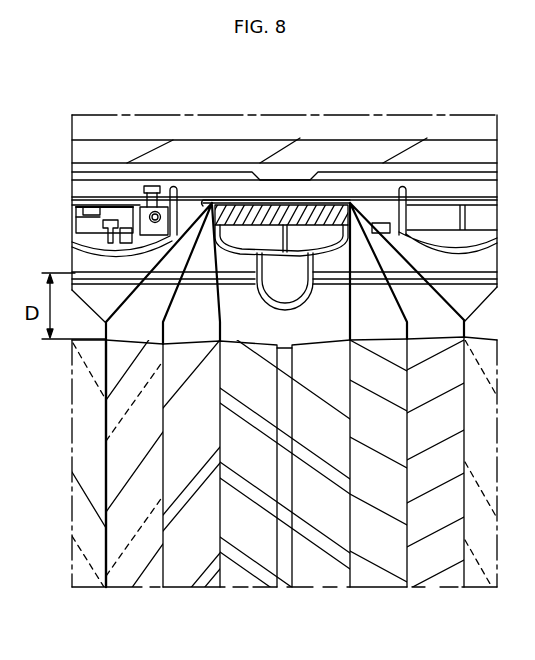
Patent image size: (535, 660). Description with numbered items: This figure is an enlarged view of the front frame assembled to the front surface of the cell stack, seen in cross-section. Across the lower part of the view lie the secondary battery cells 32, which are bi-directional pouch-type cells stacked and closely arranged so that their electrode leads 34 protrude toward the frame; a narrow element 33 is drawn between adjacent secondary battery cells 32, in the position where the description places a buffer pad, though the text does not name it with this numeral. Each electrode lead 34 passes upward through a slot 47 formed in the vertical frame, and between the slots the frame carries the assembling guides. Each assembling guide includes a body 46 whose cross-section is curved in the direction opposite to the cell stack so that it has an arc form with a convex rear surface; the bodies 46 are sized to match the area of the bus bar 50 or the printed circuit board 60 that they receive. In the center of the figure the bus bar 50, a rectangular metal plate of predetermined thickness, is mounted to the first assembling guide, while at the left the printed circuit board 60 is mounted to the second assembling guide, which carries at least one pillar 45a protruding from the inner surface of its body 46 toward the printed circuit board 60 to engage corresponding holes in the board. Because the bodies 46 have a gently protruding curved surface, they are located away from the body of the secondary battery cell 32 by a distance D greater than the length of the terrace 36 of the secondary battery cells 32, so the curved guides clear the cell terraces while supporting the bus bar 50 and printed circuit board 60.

The secondary battery cell 32 is at (244, 578).
The center partition column 33 is at (290, 578).
The electrode lead 34 is at (225, 200).
The terrace 36 is at (166, 318).
The pillar 45a is at (150, 186).
The body 46 is at (342, 203).
The slot 47 is at (192, 213).
The bus bar 50 is at (292, 212).
The printed circuit board 60 is at (100, 205).